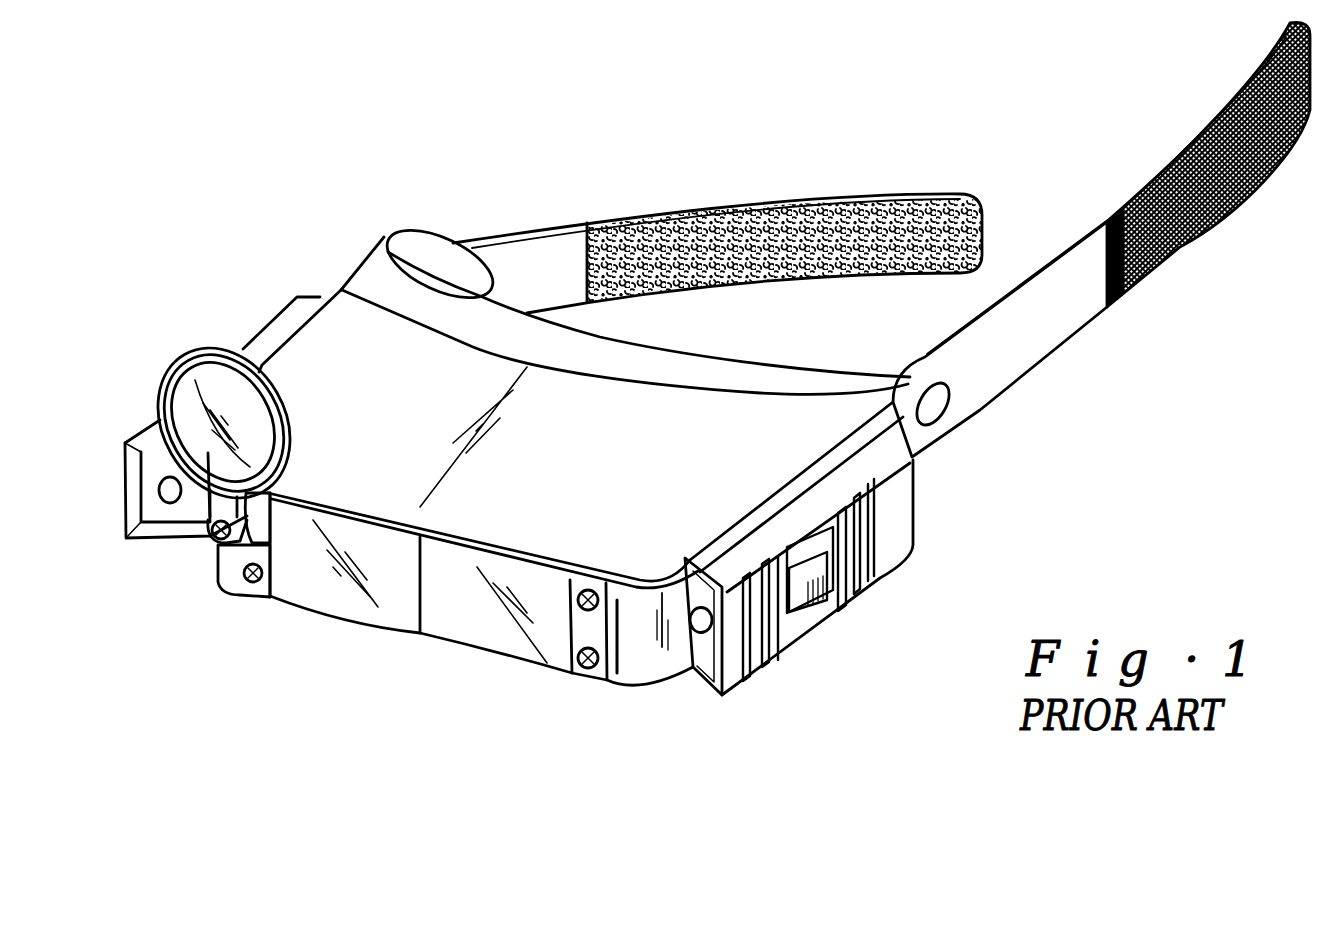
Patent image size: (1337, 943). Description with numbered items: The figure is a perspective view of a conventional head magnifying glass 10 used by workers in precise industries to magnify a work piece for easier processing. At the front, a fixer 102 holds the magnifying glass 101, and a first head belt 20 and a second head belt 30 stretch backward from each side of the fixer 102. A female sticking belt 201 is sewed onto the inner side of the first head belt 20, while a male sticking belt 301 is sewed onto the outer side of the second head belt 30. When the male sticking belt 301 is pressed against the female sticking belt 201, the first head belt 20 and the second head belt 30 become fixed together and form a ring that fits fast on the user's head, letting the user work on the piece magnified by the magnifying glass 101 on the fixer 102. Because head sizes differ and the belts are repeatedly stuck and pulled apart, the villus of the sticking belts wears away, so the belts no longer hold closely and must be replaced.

The head magnifying glass 10 is at (958, 512).
The magnifying glass 101 is at (555, 660).
The fixer 102 is at (643, 670).
The first head belt 20 is at (537, 242).
The female sticking belt 201 is at (780, 207).
The second head belt 30 is at (1035, 347).
The male sticking belt 301 is at (1217, 227).